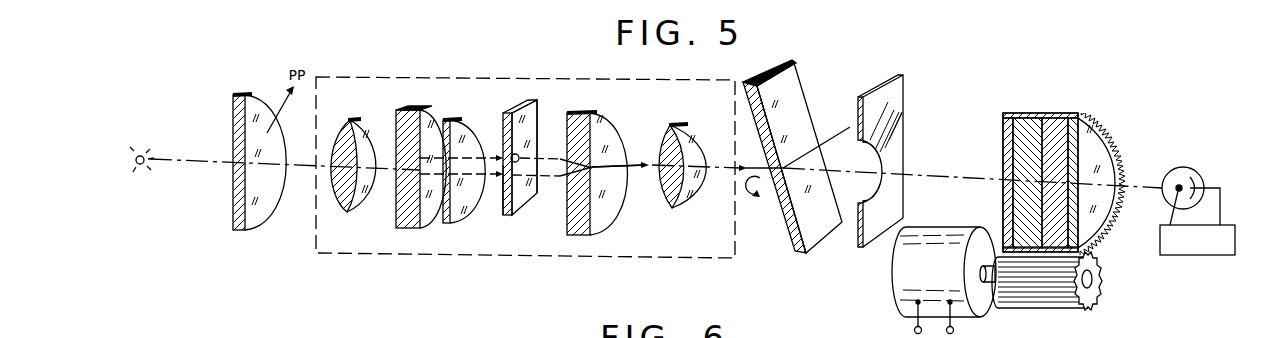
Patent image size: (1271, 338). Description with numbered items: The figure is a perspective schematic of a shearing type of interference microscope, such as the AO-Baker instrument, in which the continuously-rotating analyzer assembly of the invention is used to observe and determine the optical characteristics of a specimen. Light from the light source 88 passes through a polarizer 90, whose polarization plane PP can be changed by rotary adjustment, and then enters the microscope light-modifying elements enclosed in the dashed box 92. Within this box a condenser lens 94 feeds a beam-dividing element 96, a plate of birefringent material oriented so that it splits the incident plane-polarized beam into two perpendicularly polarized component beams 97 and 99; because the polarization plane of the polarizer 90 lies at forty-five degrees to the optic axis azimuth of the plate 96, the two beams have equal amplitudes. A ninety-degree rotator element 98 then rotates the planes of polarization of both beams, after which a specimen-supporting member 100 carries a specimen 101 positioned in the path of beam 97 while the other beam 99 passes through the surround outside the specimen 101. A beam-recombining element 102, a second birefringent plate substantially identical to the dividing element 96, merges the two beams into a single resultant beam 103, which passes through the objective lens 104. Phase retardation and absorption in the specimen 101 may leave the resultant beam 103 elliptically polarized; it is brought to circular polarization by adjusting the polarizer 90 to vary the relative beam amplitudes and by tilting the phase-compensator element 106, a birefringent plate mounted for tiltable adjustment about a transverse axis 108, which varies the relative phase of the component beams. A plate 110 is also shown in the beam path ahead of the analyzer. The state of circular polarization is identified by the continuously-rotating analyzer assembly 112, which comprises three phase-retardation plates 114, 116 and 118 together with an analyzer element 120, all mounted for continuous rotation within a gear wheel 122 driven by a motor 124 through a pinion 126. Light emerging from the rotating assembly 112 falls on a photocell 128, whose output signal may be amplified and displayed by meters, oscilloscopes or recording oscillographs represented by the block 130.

The light source 88 is at (137, 156).
The polarizer 90 is at (236, 113).
The box enclosing microscope light-modifying elements 92 is at (453, 256).
The condenser lens 94 is at (340, 133).
The beam-dividing element 96 is at (396, 117).
The component beam (specimen beam) 97 is at (491, 157).
The 90° rotator element 98 is at (477, 127).
The component beam (surround beam) 99 is at (492, 178).
The specimen-supporting member 100 is at (535, 116).
The specimen 101 is at (516, 164).
The beam-recombining element 102 is at (607, 125).
The resultant beam 103 is at (630, 170).
The objective lens 104 is at (685, 126).
The phase-compensator element 106 is at (790, 82).
The transverse axis 108 is at (828, 139).
The plate with lens cutout 110 is at (905, 110).
The continuously-rotating analyzer assembly 112 is at (1083, 172).
The phase-retardation plate 114 is at (1010, 157).
The phase-retardation plate 116 is at (1022, 137).
The phase-retardation plate 118 is at (1055, 125).
The analyzer element 120 is at (1093, 125).
The gear wheel 122 is at (1118, 134).
The motor 124 is at (906, 275).
The pinion 126 is at (1044, 306).
The photocell 128 is at (1196, 170).
The amplification and display devices block 130 is at (1181, 251).